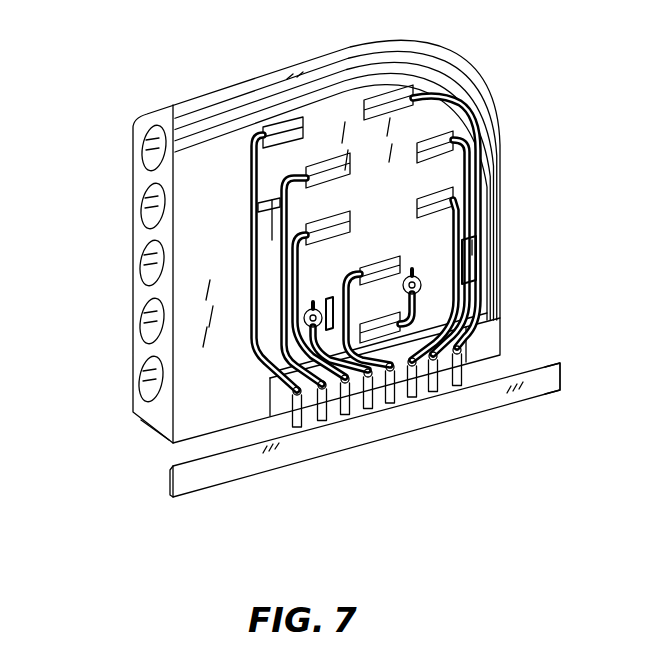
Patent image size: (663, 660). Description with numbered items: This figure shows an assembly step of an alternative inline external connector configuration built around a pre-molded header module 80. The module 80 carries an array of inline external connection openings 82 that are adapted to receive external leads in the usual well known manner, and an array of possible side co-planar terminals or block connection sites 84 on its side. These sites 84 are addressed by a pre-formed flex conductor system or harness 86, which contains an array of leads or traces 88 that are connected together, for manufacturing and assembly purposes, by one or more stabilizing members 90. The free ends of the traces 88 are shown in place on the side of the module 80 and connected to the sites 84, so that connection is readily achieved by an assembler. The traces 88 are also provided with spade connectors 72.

The spade connectors 72 is at (468, 352).
The pre-molded header module 80 is at (143, 437).
The inline external connection openings 82 is at (143, 160).
The side co-planar terminals or block connection sites 84 is at (368, 103).
The pre-formed flex conductor system or harness 86 is at (238, 494).
The leads or traces 88 is at (458, 212).
The stabilizing members 90 is at (543, 382).